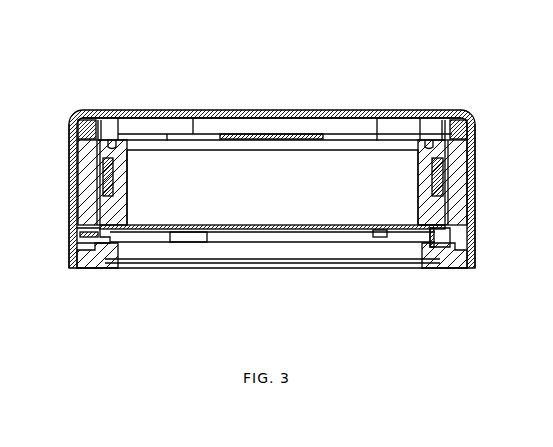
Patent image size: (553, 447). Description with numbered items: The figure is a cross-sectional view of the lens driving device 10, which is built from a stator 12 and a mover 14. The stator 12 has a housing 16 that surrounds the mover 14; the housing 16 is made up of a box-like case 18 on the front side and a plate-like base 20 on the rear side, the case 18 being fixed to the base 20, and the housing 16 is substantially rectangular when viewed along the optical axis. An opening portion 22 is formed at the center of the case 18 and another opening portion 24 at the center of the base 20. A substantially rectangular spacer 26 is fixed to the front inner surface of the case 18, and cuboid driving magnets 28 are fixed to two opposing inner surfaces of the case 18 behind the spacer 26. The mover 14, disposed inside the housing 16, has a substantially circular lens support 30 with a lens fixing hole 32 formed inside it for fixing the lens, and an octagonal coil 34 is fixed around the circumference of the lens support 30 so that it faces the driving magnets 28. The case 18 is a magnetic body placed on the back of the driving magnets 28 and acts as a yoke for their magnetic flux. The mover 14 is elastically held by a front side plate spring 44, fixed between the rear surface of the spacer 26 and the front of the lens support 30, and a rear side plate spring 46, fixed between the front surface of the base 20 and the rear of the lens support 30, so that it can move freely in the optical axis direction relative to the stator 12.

The lens driving device 10 is at (415, 86).
The stator 12 is at (479, 110).
The mover 14 is at (328, 242).
The housing 16 is at (480, 187).
The case 18 is at (72, 134).
The base 20 is at (110, 258).
The opening portion 22 is at (294, 110).
The opening portion 24 is at (282, 257).
The spacer 26 is at (86, 122).
The driving magnet 28 is at (82, 175).
The lens support 30 is at (438, 215).
The lens fixing hole 32 is at (112, 210).
The coil 34 is at (436, 178).
The front side plate spring 44 is at (248, 134).
The rear side plate spring 46 is at (103, 232).